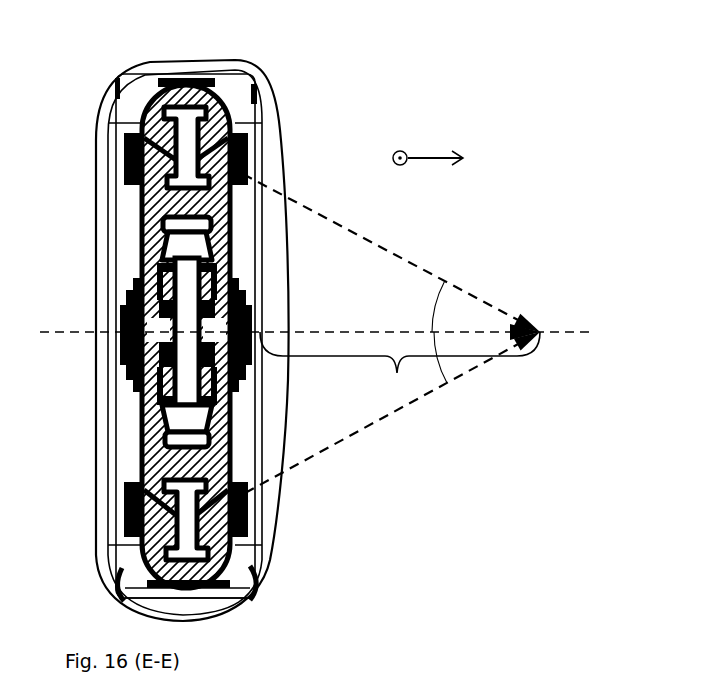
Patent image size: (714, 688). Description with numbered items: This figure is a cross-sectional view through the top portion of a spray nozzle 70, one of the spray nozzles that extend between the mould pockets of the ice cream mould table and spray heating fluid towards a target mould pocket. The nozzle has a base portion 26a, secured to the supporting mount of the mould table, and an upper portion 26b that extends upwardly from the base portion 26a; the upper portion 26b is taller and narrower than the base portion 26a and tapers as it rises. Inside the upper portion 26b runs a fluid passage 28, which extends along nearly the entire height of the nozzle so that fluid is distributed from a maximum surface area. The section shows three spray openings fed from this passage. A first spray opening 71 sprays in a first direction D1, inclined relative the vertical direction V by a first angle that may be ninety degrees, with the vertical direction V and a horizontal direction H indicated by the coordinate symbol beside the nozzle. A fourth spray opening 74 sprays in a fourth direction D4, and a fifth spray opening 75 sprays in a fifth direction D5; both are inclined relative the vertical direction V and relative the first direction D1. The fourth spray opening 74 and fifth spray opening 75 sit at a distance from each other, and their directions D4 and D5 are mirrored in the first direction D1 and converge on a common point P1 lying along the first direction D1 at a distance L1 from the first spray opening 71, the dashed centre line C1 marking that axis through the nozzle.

The spray nozzle 70 is at (90, 54).
The base portion 26a is at (262, 290).
The upper portion 26b is at (208, 213).
The fifth spray opening 75 is at (233, 122).
The first spray opening 71 is at (237, 373).
The fluid passage 28 is at (200, 362).
The fourth spray opening 74 is at (236, 544).
The center line C1 is at (571, 334).
The common point P1 is at (543, 331).
The fifth direction D5 is at (472, 293).
The fourth direction D4 is at (348, 440).
The distance L1 is at (398, 374).
The first direction D1 is at (468, 334).
The vertical direction V is at (401, 150).
The horizontal direction H is at (451, 152).